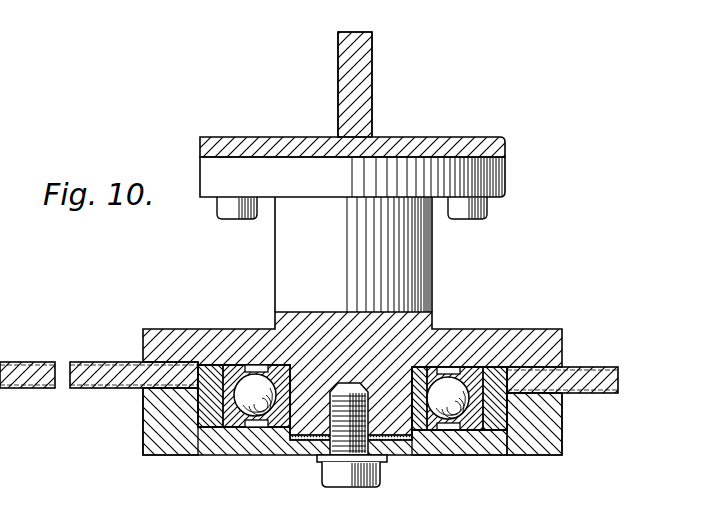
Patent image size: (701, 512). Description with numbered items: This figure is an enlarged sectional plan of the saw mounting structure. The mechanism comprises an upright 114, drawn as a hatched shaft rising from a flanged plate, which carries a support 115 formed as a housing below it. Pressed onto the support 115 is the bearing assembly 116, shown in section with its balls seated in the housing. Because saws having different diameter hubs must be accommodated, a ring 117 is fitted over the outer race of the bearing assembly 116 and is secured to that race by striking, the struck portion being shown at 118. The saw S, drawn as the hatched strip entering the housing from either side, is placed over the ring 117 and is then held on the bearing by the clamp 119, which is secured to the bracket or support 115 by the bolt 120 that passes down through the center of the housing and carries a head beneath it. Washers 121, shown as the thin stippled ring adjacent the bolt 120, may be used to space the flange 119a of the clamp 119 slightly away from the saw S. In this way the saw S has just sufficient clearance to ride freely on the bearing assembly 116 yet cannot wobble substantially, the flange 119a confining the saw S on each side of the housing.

The upright 114 is at (440, 138).
The support 115 is at (309, 354).
The bearing assembly 116 is at (278, 422).
The ring 117 is at (193, 430).
The striking 118 is at (223, 421).
The clamp 119 is at (428, 446).
The flange 119a is at (157, 407).
The bolt 120 is at (333, 478).
The washers 121 is at (308, 441).
The saw S is at (88, 362).